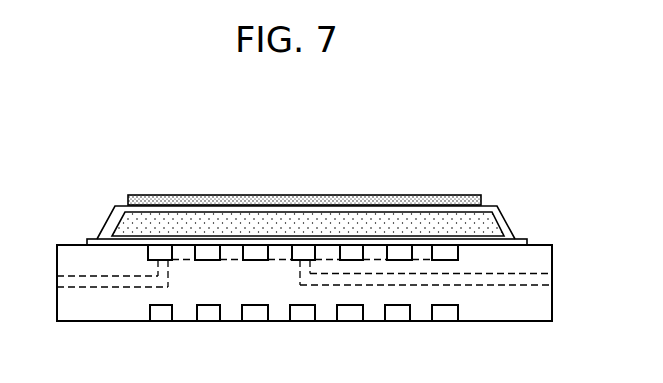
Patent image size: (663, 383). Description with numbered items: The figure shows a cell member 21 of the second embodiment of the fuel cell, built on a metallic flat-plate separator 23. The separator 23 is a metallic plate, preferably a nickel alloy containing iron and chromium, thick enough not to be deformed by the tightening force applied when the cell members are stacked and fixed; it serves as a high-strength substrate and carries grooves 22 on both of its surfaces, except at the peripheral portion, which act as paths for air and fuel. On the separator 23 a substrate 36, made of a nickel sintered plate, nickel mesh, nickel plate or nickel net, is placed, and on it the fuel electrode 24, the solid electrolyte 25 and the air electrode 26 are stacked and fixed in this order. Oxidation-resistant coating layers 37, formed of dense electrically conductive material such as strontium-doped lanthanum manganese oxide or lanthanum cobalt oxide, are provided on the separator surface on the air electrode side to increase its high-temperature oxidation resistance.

The cell member 21 is at (208, 195).
The grooves 22 is at (441, 256).
The metallic flat-plate separator 23 is at (533, 254).
The fuel electrode 24 is at (372, 232).
The solid electrolyte 25 is at (320, 212).
The air electrode 26 is at (283, 197).
The substrate 36 is at (89, 239).
The oxidation-resistant coating layers 37 is at (93, 322).